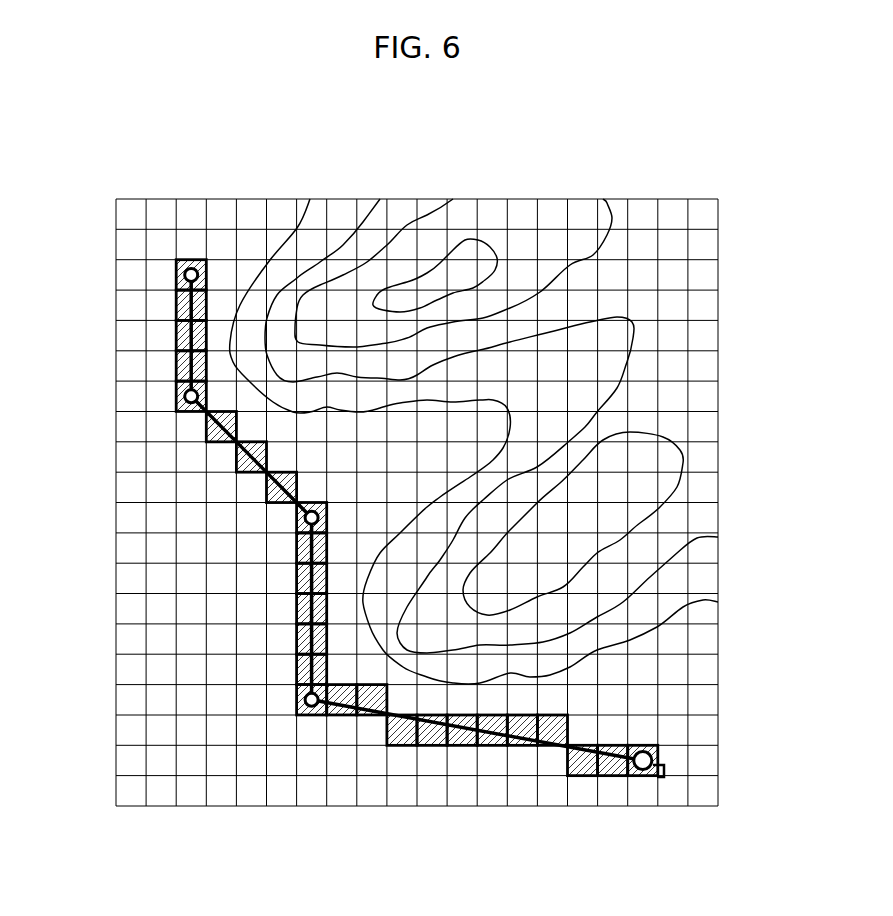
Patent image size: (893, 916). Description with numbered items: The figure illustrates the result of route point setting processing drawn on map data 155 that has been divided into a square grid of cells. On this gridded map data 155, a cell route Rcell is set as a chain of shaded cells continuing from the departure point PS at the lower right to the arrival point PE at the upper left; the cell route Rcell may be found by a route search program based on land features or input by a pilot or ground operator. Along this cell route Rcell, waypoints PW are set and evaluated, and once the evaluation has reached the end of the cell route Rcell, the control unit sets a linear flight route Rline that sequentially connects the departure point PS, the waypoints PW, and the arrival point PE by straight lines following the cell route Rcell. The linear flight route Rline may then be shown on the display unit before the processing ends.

The map data 155 is at (718, 242).
The arrival point PE is at (183, 271).
The waypoint PW is at (183, 394).
The departure point PS is at (644, 771).
The linear flight route Rline is at (300, 612).
The cell route Rcell is at (455, 751).